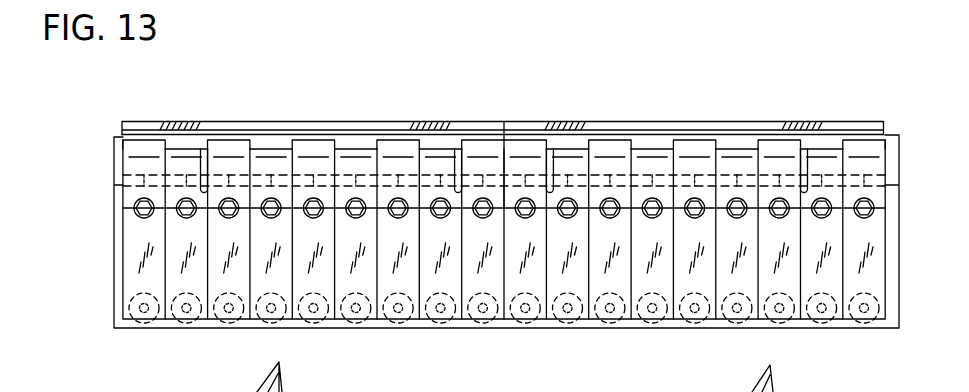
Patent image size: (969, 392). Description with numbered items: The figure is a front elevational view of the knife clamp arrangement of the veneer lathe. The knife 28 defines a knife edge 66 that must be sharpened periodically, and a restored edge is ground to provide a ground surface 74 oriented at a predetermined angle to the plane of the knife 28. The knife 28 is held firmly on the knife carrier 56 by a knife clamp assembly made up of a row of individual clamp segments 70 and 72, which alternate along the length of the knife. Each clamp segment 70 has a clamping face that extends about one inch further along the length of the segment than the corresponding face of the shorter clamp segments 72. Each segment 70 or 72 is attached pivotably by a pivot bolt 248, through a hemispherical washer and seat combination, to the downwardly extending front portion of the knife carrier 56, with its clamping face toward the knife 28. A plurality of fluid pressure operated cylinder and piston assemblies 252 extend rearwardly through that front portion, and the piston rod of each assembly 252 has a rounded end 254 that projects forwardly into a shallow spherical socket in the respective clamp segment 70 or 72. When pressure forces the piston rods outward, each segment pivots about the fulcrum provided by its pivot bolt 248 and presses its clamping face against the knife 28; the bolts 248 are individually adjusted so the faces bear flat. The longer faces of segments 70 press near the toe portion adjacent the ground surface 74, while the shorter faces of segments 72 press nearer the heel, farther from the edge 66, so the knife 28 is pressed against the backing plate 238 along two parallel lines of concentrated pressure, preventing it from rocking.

The knife 28 is at (516, 122).
The knife carrier 56 is at (113, 238).
The knife edge 66 is at (272, 122).
The clamp segment 70 is at (593, 143).
The clamp segment 72 is at (350, 149).
The ground surface 74 is at (364, 122).
The pivot bolt 248 is at (138, 207).
The cylinder and piston assembly 252 is at (603, 320).
The rounded end 254 is at (518, 317).
The backing plate 238 is at (222, 391).